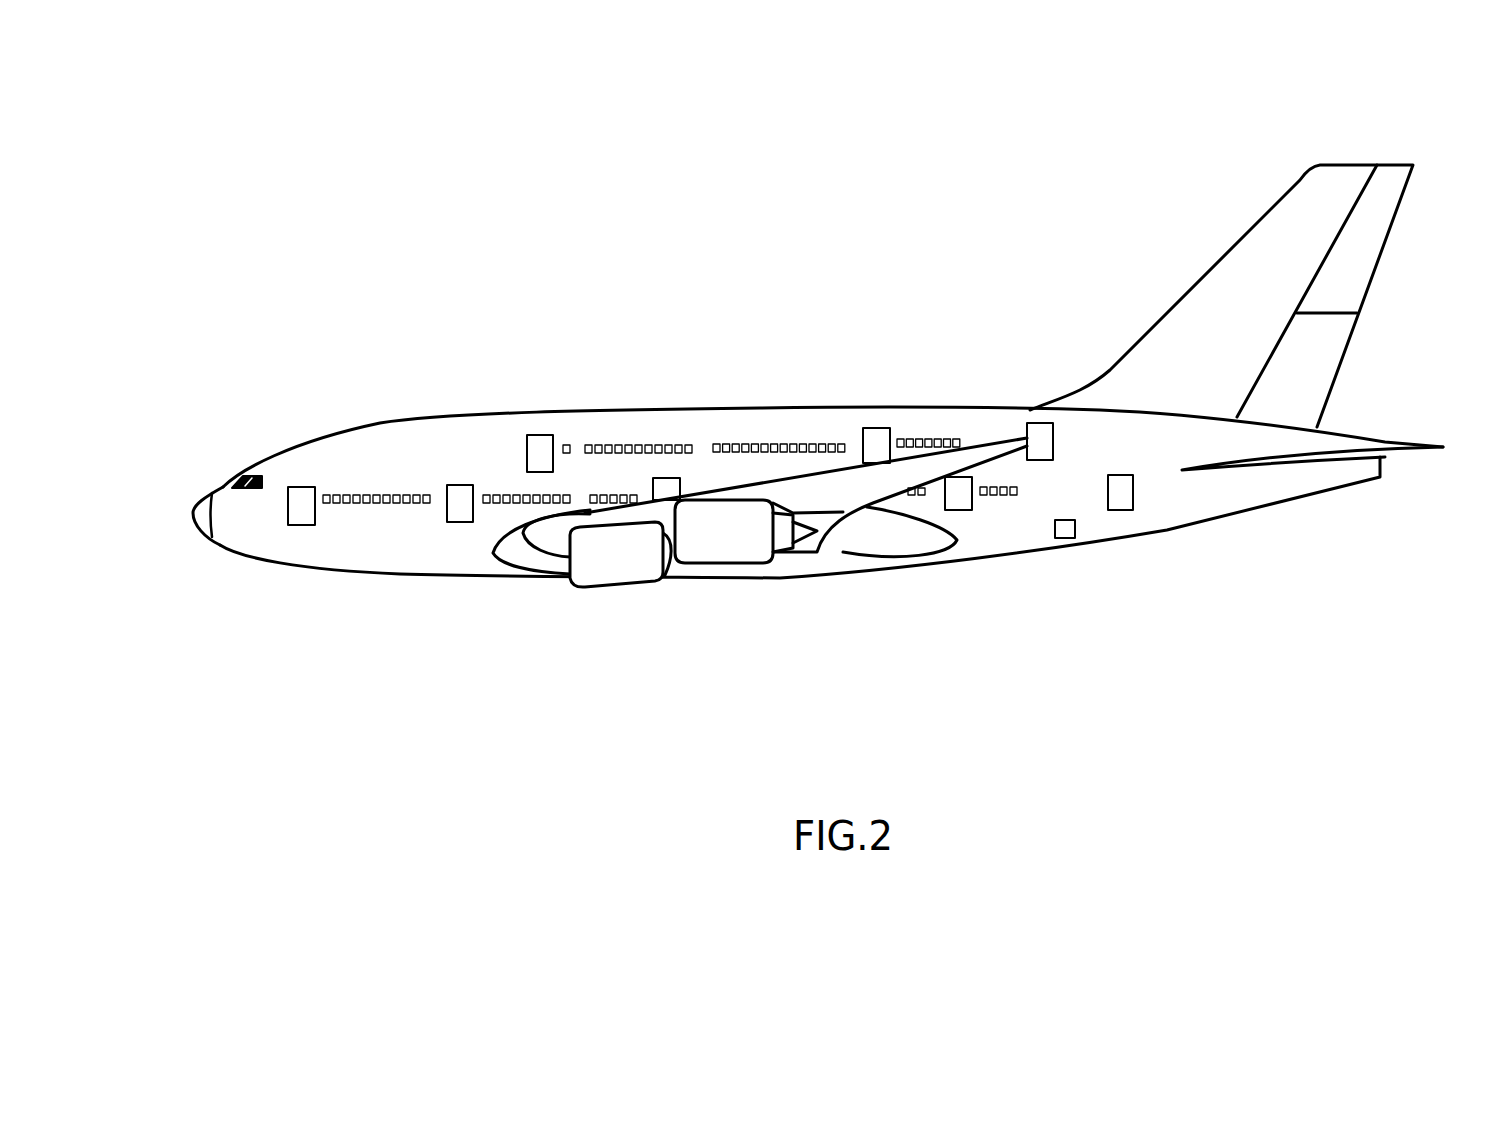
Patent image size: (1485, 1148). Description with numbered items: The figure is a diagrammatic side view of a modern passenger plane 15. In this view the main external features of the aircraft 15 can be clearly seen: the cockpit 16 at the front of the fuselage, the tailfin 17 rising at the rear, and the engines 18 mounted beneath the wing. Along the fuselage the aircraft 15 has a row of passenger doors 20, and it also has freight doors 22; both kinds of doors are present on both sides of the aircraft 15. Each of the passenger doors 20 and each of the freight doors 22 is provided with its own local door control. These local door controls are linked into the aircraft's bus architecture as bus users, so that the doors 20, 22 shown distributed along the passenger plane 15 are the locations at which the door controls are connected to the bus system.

The passenger plane 15 is at (578, 305).
The cockpit 16 is at (263, 462).
The tailfin 17 is at (1310, 388).
The engines 18 is at (613, 573).
The passenger doors 20 is at (877, 427).
The freight doors 22 is at (1063, 541).